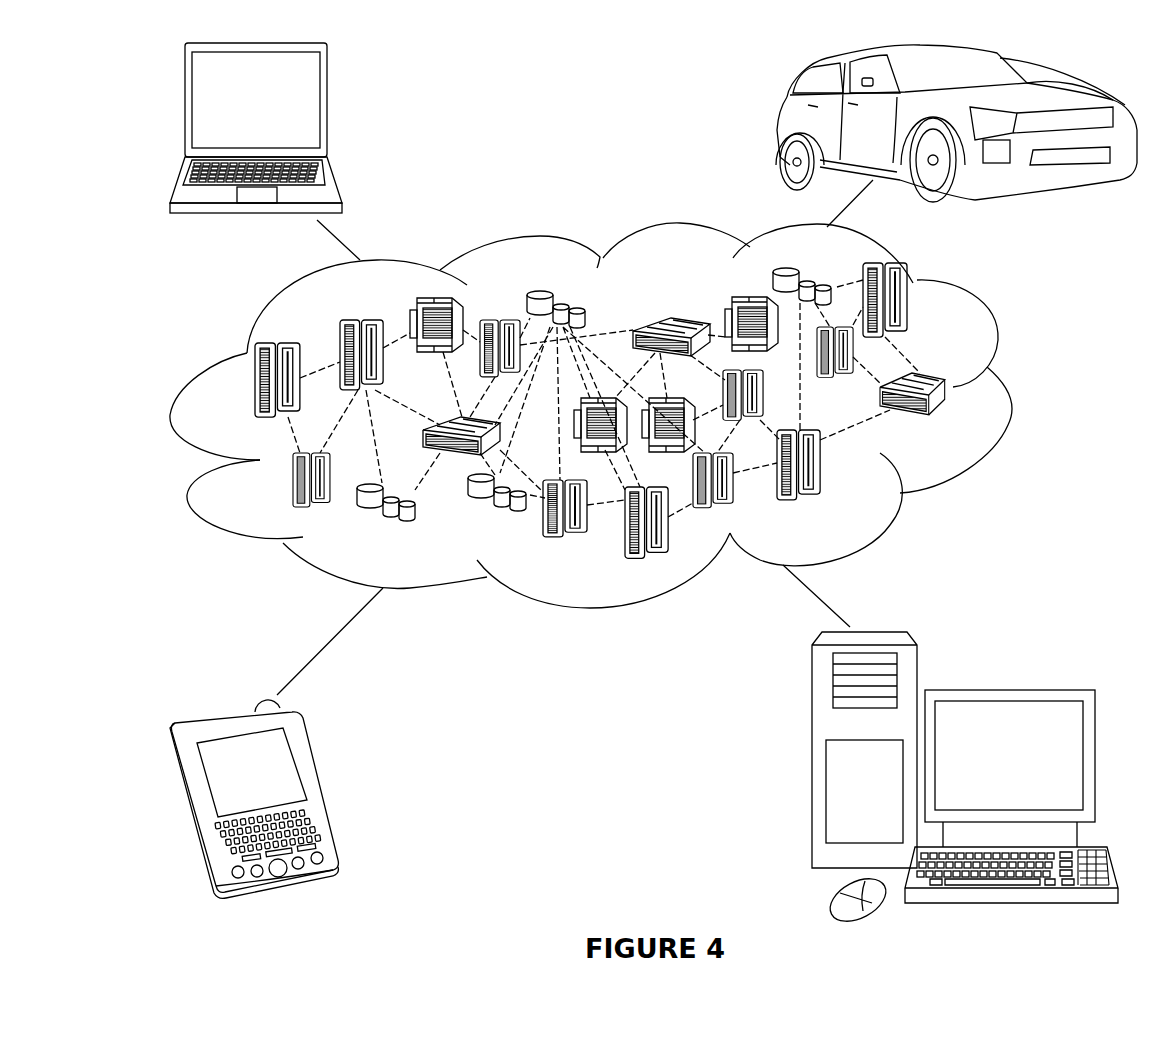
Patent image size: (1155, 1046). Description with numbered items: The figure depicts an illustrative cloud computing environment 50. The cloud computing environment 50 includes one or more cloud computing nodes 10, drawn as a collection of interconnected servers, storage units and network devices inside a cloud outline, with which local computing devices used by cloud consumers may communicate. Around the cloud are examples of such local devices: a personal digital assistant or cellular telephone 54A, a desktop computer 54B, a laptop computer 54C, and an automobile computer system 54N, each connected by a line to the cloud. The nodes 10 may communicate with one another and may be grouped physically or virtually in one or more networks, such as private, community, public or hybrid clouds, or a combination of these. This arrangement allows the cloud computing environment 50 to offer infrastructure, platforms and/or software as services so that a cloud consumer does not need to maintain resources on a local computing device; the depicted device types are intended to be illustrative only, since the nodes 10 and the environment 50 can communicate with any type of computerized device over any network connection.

The cloud computing nodes 10 is at (955, 423).
The cloud computing environment 50 is at (1008, 390).
The personal digital assistant or cellular telephone 54A is at (318, 788).
The desktop computer 54B is at (1005, 690).
The laptop computer 54C is at (327, 108).
The automobile computer system 54N is at (778, 122).